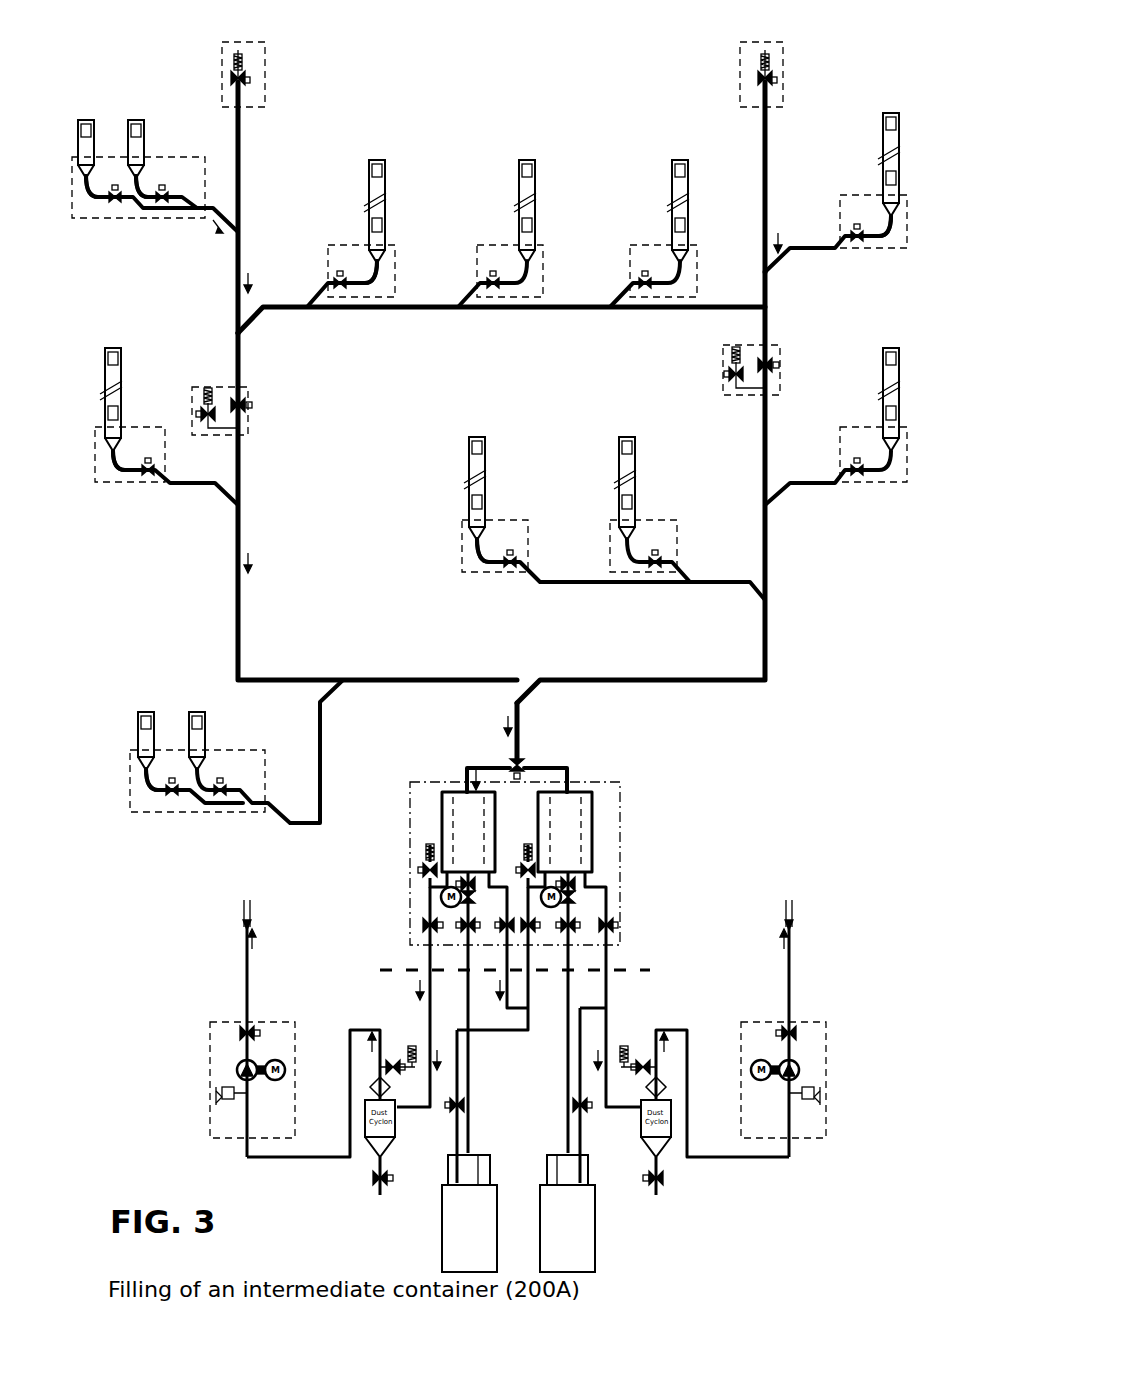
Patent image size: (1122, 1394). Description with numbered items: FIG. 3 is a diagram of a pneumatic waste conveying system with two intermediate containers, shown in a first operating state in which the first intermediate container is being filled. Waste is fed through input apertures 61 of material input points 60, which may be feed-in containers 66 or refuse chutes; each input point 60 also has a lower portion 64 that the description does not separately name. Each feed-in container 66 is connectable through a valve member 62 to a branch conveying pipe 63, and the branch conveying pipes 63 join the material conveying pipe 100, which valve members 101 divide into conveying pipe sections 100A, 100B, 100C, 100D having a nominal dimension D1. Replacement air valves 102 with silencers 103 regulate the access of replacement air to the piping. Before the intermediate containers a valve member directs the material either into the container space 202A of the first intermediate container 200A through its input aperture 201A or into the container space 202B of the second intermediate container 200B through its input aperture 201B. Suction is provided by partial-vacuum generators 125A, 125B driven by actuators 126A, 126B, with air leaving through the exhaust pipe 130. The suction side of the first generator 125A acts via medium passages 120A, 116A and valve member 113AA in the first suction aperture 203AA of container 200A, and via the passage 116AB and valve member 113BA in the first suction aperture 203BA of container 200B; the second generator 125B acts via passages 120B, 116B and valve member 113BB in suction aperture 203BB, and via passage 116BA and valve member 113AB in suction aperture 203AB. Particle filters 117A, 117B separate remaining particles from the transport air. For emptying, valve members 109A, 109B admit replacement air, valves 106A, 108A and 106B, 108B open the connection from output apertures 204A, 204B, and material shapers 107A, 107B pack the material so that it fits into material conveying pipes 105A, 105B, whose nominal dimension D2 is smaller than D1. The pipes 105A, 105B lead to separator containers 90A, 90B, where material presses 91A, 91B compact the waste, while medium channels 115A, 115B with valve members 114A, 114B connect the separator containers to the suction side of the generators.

The material input point 60 is at (80, 140).
The input aperture 61 is at (84, 124).
The valve member 62 is at (112, 202).
The branch conveying pipe 63 is at (213, 228).
The inlet hopper 64 is at (78, 170).
The feed-in container 66 is at (90, 190).
The material conveying pipe 100 is at (522, 725).
The conveying pipe section 100A is at (240, 592).
The conveying pipe section 100B is at (768, 562).
The conveying pipe section 100C is at (240, 165).
The conveying pipe section 100D is at (770, 165).
The valve member 101 is at (246, 403).
The replacement air valve 102 is at (246, 78).
The silencer 103 is at (244, 58).
The first intermediate container 200A is at (442, 818).
The second intermediate container 200B is at (592, 832).
The input aperture 201A is at (462, 786).
The input aperture 201B is at (570, 790).
The container space 202A is at (453, 842).
The container space 202B is at (582, 857).
The output aperture 204A is at (484, 847).
The output aperture 204B is at (560, 872).
The first suction aperture 203AA is at (421, 862).
The second suction aperture 203AB is at (494, 864).
The first suction aperture 203BA is at (540, 862).
The second suction aperture 203BB is at (592, 878).
The valve 106A is at (441, 899).
The valve 106B is at (577, 899).
The material shaper 107A is at (459, 927).
The material shaper 107B is at (577, 927).
The valve 108A is at (458, 928).
The valve 108B is at (578, 929).
The valve member 109A is at (459, 886).
The valve member 109B is at (577, 886).
The valve member 113AA is at (424, 934).
The valve member 113AB is at (506, 935).
The valve member 113BA is at (531, 935).
The valve member 113BB is at (610, 935).
The valve member 114A is at (452, 1112).
The valve member 114B is at (585, 1112).
The medium channel 115A is at (459, 1062).
The medium channel 115B is at (578, 1072).
The medium channel 116A is at (428, 1032).
The medium channel 116B is at (608, 1025).
The medium passage 116AB is at (460, 1030).
The medium passage 116BA is at (578, 1008).
The material conveying pipe 105A is at (469, 1090).
The material conveying pipe 105B is at (578, 1142).
The particle filter 117A is at (365, 1152).
The particle filter 117B is at (671, 1152).
The medium channel 120A is at (350, 1125).
The medium channel 120B is at (705, 1092).
The first partial-vacuum generator 125A is at (237, 1068).
The second partial-vacuum generator 125B is at (799, 1068).
The actuator 126A is at (285, 1070).
The actuator 126B is at (752, 1068).
The exhaust pipe 130 is at (252, 925).
The separator container 90A is at (444, 1215).
The separator container 90B is at (594, 1215).
The material press 91A is at (448, 1162).
The material press 91B is at (588, 1162).
The nominal dimension D1 is at (400, 680).
The nominal dimension D2 is at (462, 1132).